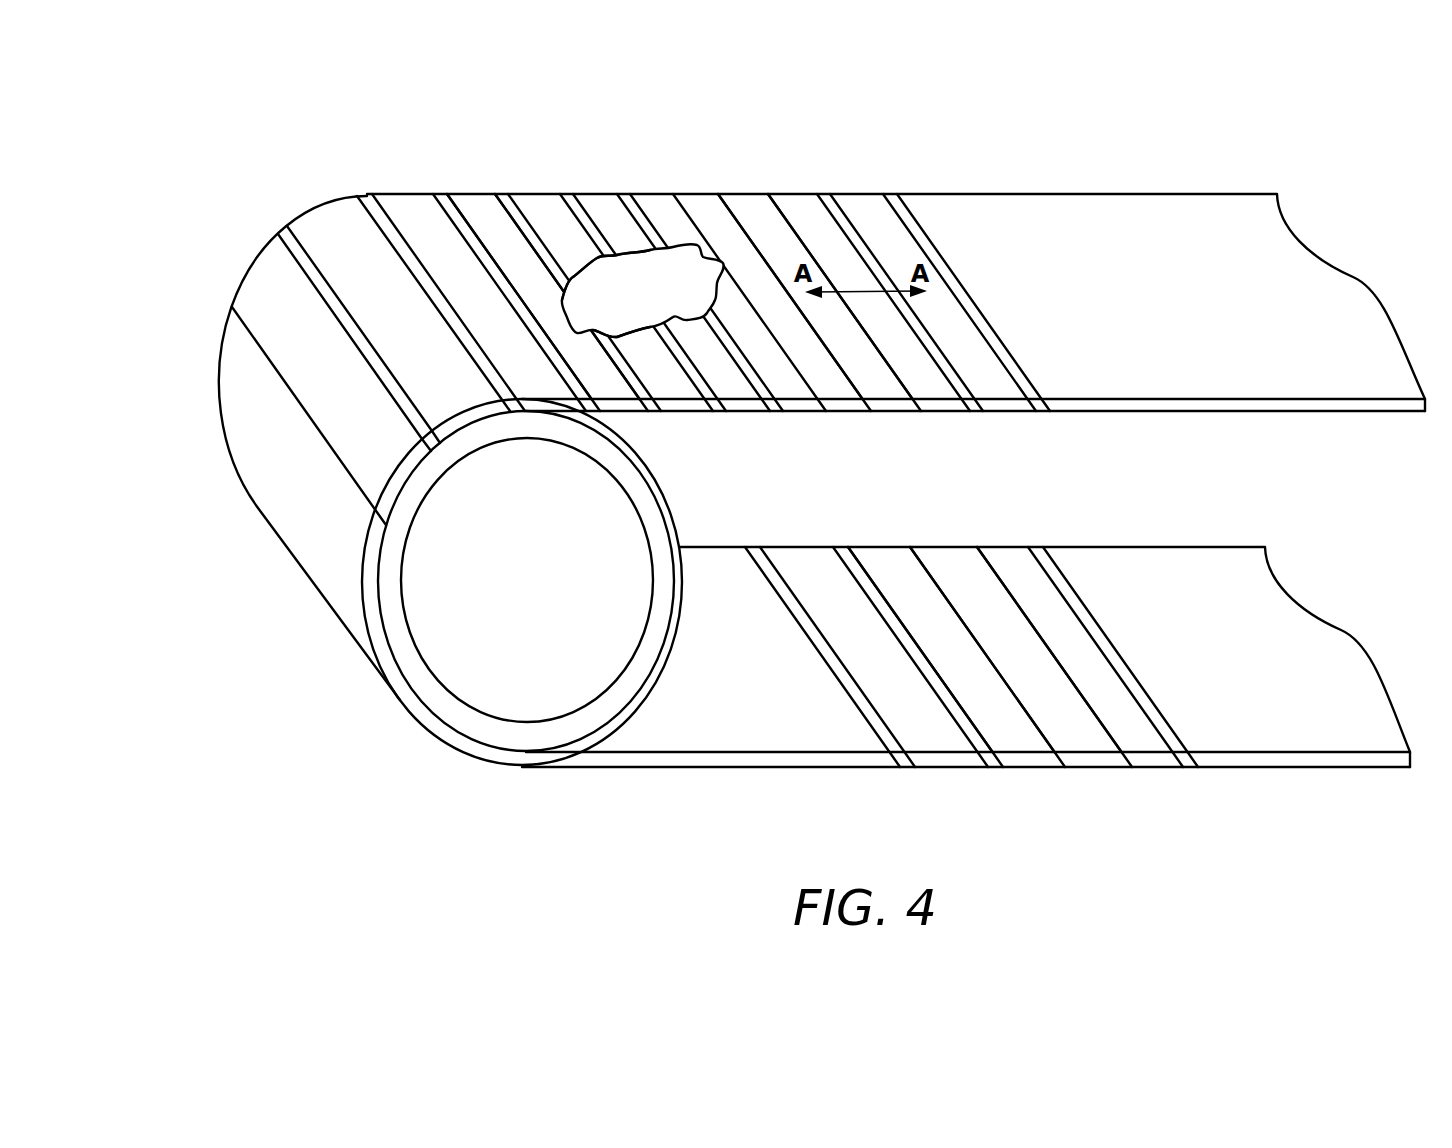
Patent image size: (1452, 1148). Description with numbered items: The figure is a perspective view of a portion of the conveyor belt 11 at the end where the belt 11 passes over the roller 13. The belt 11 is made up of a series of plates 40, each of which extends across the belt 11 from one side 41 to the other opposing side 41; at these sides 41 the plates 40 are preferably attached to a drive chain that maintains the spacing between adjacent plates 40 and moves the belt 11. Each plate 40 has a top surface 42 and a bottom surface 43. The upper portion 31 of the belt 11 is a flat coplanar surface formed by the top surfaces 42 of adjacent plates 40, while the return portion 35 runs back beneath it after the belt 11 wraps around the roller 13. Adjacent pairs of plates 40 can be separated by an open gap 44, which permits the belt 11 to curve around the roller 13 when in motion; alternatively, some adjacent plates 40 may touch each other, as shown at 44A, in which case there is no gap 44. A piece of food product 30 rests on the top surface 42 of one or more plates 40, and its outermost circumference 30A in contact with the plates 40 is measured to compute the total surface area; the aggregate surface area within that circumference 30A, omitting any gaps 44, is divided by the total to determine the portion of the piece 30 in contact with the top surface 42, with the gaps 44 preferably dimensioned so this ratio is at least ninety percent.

The conveyor belt 11 is at (240, 252).
The roller 13 is at (517, 592).
The piece of food product 30 is at (627, 304).
The outermost circumference 30A is at (622, 252).
The upper portion 31 is at (1107, 297).
The return portion 35 is at (1177, 654).
The plate 40 is at (465, 176).
The side 41 is at (740, 412).
The top surface 42 is at (465, 312).
The bottom surface 43 is at (849, 659).
The gap 44 is at (277, 232).
The touching adjacent plates 44A is at (768, 194).